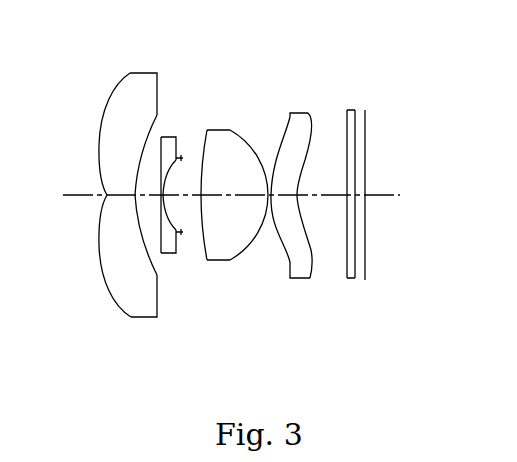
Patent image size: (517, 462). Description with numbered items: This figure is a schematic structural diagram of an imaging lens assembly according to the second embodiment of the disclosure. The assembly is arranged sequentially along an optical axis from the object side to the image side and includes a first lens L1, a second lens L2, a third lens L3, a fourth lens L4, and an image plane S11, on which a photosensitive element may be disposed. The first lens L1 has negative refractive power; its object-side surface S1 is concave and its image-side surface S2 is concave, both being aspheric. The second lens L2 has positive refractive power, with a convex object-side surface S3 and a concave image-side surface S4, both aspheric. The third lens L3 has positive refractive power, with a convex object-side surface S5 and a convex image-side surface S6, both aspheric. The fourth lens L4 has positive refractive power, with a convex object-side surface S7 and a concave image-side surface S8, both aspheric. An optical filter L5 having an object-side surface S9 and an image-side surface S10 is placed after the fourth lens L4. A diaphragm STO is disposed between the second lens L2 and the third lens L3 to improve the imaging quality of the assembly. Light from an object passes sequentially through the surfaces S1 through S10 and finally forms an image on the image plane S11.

The first lens L1 is at (136, 73).
The second lens L2 is at (162, 137).
The third lens L3 is at (207, 130).
The fourth lens L4 is at (299, 113).
The optical filter L5 is at (350, 110).
The diaphragm STO is at (178, 157).
The object-side surface of the first lens S1 is at (107, 195).
The image-side surface of the first lens S2 is at (135, 195).
The object-side surface of the second lens S3 is at (134, 196).
The image-side surface of the second lens S4 is at (163, 195).
The object-side surface of the third lens S5 is at (201, 195).
The image-side surface of the third lens S6 is at (268, 195).
The object-side surface of the fourth lens S7 is at (272, 195).
The image-side surface of the fourth lens S8 is at (298, 195).
The object-side surface of the optical filter S9 is at (347, 195).
The image-side surface of the optical filter S10 is at (365, 195).
The image plane S11 is at (355, 195).